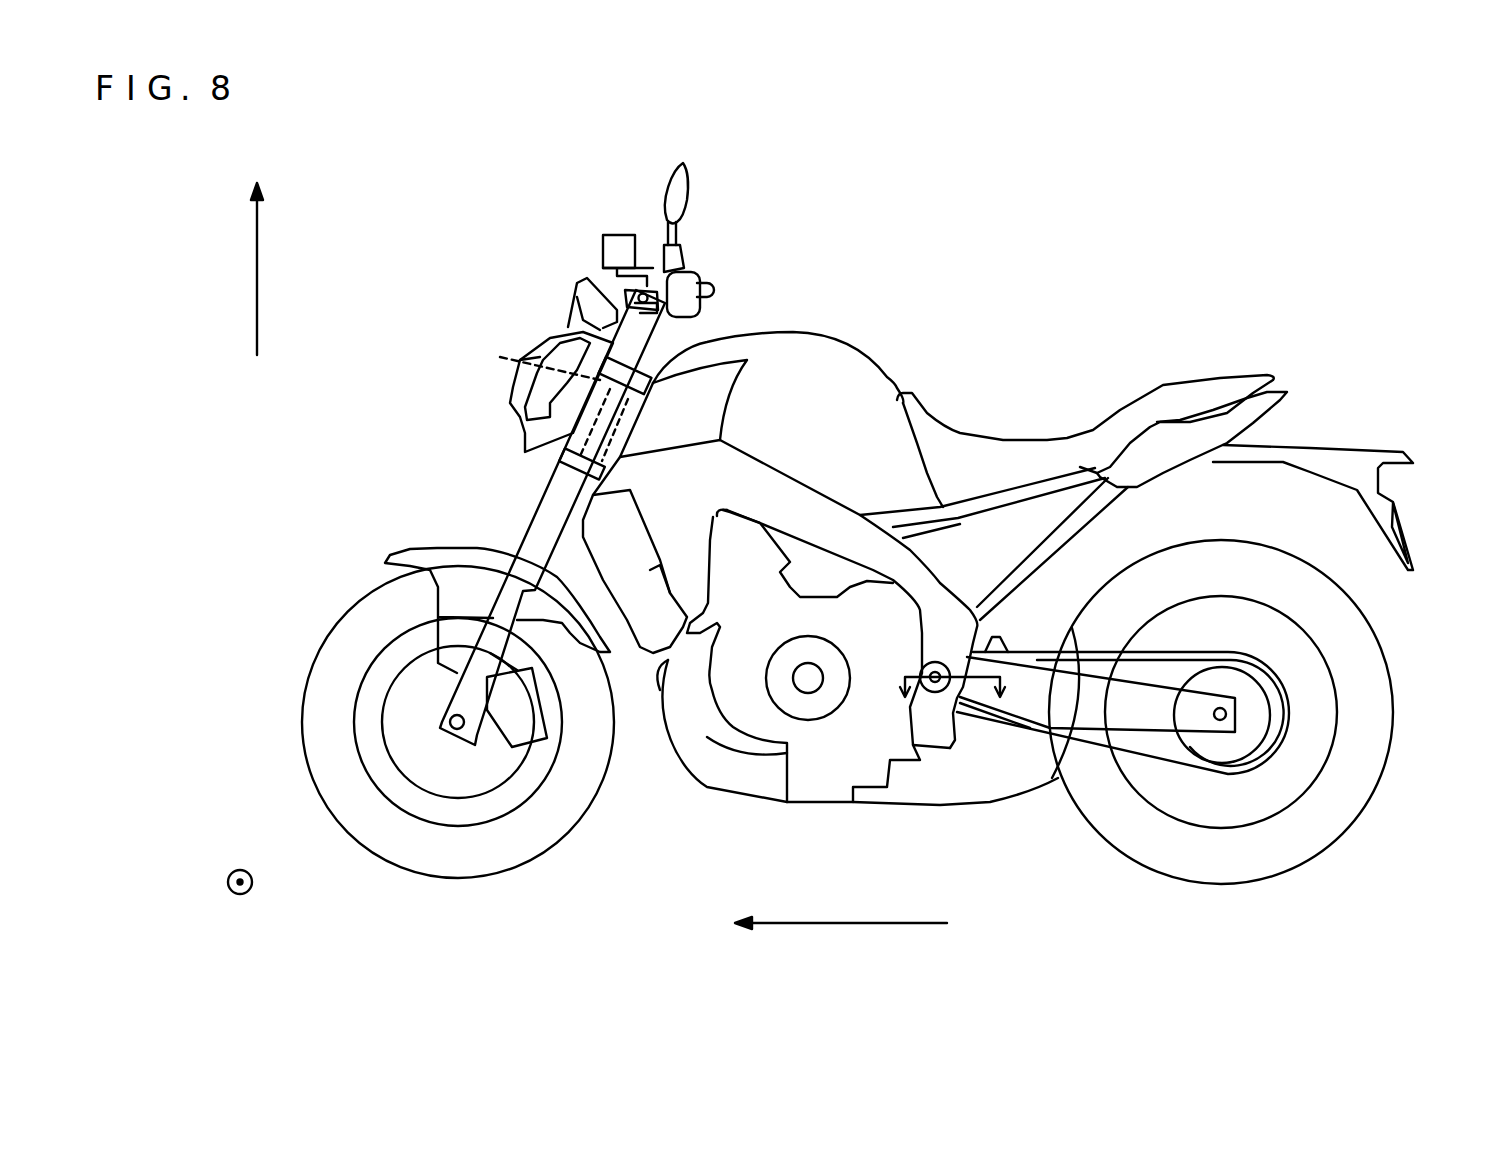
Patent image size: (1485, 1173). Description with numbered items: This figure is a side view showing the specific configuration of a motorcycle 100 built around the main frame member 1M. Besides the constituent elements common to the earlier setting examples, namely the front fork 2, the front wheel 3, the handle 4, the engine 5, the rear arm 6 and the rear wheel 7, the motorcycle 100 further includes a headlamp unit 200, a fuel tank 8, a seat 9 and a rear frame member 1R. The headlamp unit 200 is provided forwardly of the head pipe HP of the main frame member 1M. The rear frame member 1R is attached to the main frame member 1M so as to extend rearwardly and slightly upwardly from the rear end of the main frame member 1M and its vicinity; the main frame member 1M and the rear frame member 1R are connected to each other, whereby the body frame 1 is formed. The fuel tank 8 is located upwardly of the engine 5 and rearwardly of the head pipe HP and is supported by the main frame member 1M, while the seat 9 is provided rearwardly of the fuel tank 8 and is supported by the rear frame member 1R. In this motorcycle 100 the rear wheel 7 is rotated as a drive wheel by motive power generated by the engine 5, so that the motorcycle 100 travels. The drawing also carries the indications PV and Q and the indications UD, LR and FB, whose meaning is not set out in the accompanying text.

The motorcycle 100 is at (1359, 219).
The headlamp unit 200 is at (552, 338).
The body frame 1 is at (922, 492).
The main frame member 1M is at (847, 527).
The rear frame member 1R is at (1050, 483).
The front fork 2 is at (540, 520).
The front wheel 3 is at (322, 666).
The handle 4 is at (684, 281).
The engine 5 is at (741, 715).
The rear arm 6 is at (1147, 707).
The rear wheel 7 is at (1378, 718).
The fuel tank 8 is at (780, 350).
The seat 9 is at (1165, 395).
The head pipe HP is at (543, 401).
The pivot shaft PV is at (932, 690).
The pivot axis region Q is at (953, 698).
The up-down direction UD is at (257, 271).
The left-right direction LR is at (255, 887).
The front-back direction FB is at (862, 925).